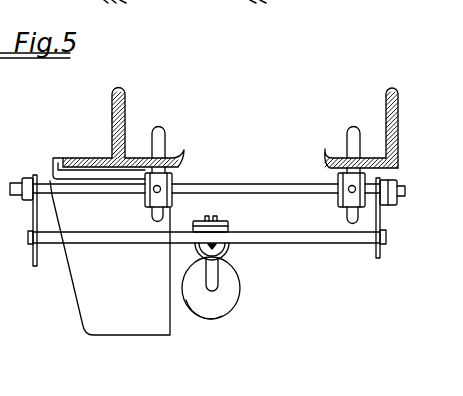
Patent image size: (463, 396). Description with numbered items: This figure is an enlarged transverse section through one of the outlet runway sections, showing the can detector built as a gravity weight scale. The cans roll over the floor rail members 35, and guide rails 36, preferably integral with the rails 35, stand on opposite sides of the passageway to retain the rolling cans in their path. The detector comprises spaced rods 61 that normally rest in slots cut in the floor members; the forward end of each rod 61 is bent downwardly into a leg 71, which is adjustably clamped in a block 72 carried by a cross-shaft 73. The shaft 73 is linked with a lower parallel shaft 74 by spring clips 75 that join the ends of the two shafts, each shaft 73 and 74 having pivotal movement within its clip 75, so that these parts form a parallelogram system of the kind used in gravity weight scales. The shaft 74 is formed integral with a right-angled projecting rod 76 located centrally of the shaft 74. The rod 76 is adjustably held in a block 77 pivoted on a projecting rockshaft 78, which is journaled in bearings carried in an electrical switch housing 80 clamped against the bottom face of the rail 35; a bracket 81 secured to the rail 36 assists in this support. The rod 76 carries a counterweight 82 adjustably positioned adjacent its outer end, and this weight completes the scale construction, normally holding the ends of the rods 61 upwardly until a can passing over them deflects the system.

The floor rail member 35 is at (134, 157).
The guide rail 36 is at (127, 100).
The rod 61 is at (166, 128).
The leg 71 is at (349, 142).
The block 72 is at (339, 203).
The cross-shaft 73 is at (251, 170).
The lower parallel shaft 74 is at (304, 241).
The spring clip 75 is at (38, 210).
The projecting rod 76 is at (219, 272).
The block 77 is at (226, 222).
The rockshaft 78 is at (182, 228).
The electrical switch housing 80 is at (110, 246).
The bracket 81 is at (111, 120).
The counterweight 82 is at (229, 300).